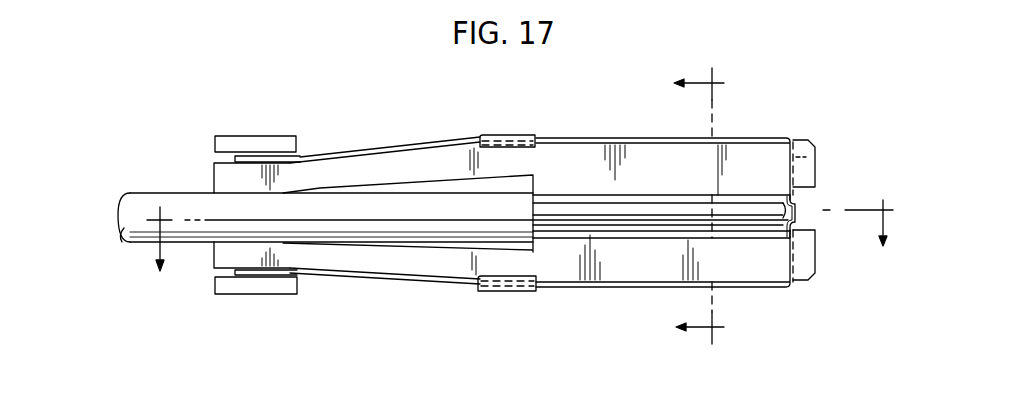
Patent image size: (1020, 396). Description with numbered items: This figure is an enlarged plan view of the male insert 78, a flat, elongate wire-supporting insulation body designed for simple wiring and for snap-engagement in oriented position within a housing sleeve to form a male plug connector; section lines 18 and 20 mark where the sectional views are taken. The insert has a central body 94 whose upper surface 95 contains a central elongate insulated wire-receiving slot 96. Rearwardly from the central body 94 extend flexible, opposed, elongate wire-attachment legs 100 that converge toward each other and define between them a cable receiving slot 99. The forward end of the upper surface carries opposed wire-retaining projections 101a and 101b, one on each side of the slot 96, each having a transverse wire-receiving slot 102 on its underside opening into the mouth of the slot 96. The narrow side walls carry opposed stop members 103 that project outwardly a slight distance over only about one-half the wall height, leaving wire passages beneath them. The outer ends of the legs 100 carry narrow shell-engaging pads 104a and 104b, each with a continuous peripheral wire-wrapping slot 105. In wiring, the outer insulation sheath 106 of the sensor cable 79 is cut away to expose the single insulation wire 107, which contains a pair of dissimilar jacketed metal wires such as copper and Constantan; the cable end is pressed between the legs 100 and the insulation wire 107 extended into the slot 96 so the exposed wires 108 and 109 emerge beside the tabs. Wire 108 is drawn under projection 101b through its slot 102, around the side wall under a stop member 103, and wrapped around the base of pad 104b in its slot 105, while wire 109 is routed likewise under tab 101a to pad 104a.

The section line 18- 18 is at (520, 250).
The section line 20- 20 is at (683, 206).
The male insert 78 is at (428, 124).
The sensor cable 79 is at (131, 128).
The central body 94 is at (656, 173).
The upper surface 95 is at (757, 155).
The wire-receiving slot 96 is at (725, 197).
The cable receiving slot 99 is at (522, 243).
The wire-attachment legs 100 is at (345, 157).
The wire-retaining projection 101a is at (805, 160).
The wire-retaining projection 101b is at (805, 262).
The transverse wire-receiving slot 102 is at (812, 147).
The stop member 103 is at (505, 135).
The shell-engaging pad 104a is at (254, 142).
The shell-engaging pad 104b is at (250, 294).
The wire-wrapping slot 105 is at (214, 160).
The outer insulation sheath 106 is at (170, 193).
The insulation wire 107 is at (639, 208).
The wire 108 is at (757, 287).
The wire 109 is at (640, 138).